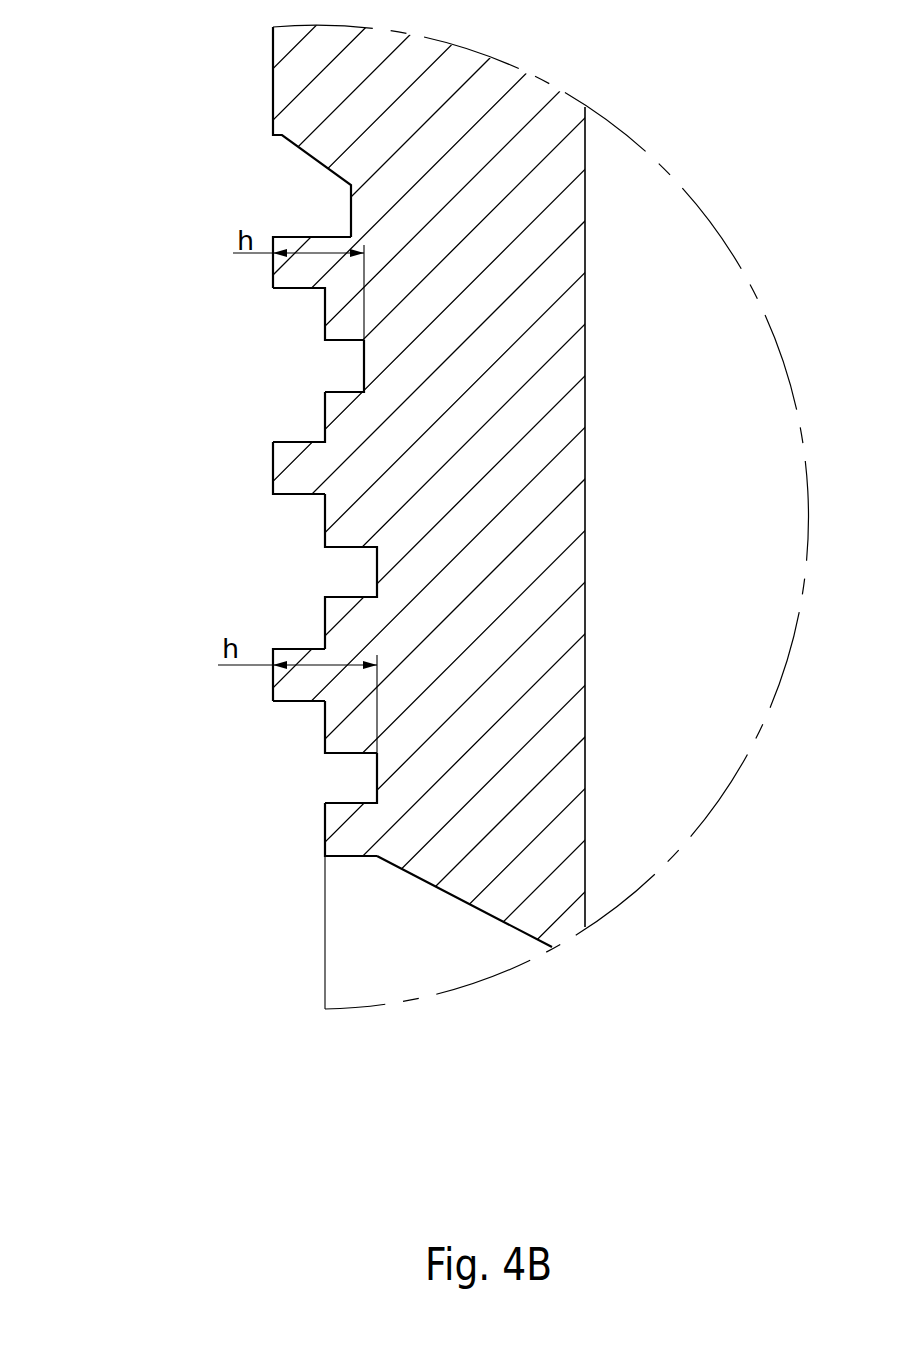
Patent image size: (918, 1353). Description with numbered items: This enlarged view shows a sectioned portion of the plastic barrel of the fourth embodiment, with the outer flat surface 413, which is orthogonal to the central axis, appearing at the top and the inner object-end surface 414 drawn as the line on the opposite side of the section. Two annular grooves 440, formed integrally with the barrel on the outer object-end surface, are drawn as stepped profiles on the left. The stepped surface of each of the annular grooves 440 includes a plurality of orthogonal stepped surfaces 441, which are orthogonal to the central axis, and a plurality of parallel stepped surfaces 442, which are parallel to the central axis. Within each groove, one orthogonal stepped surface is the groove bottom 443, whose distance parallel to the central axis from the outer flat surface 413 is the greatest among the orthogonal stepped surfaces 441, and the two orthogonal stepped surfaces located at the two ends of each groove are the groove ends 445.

The outer flat surface 413 is at (273, 80).
The inner object-end surface 414 is at (585, 268).
The annular grooves 440 is at (128, 270).
The orthogonal stepped surfaces 441 is at (325, 417).
The parallel stepped surfaces 442 is at (290, 290).
The groove bottom 443 is at (362, 367).
The groove end 445 is at (275, 262).